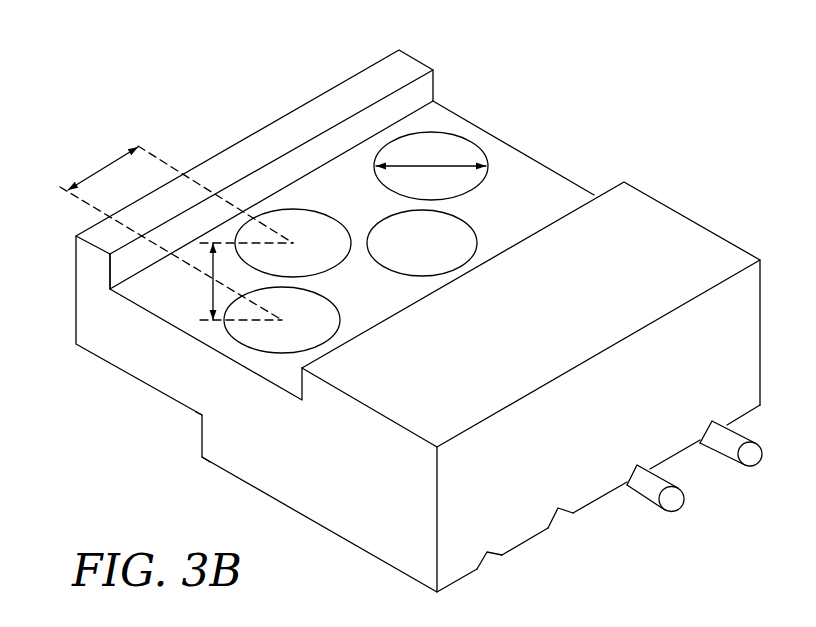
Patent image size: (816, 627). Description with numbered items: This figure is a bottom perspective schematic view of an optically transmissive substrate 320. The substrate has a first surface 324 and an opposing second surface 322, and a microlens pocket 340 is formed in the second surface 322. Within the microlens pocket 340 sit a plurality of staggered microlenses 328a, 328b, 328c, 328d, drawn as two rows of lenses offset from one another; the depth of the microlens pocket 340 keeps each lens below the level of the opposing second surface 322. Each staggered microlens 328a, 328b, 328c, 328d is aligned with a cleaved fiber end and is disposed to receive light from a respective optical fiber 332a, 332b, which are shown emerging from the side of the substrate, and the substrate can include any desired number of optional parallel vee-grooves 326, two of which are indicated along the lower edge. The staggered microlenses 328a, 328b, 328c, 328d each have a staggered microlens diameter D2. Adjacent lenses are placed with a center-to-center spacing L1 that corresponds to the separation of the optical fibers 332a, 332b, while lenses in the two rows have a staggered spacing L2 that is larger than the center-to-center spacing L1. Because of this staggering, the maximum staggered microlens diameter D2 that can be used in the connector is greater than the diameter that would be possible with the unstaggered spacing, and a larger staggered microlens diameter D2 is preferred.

The optically transmissive substrate 320 is at (95, 327).
The opposing second surface 322 is at (630, 206).
The first surface 324 is at (222, 468).
The parallel vee-grooves 326 is at (564, 515).
The staggered microlens 328a is at (452, 145).
The staggered microlens 328b is at (463, 247).
The staggered microlens 328c is at (307, 222).
The staggered microlens 328d is at (323, 325).
The optical fiber 332a is at (718, 448).
The optical fiber 332b is at (645, 483).
The microlens pocket 340 is at (538, 144).
The staggered microlens diameter D2 is at (422, 166).
The center-to-center spacing L1 is at (101, 169).
The staggered spacing L2 is at (212, 292).